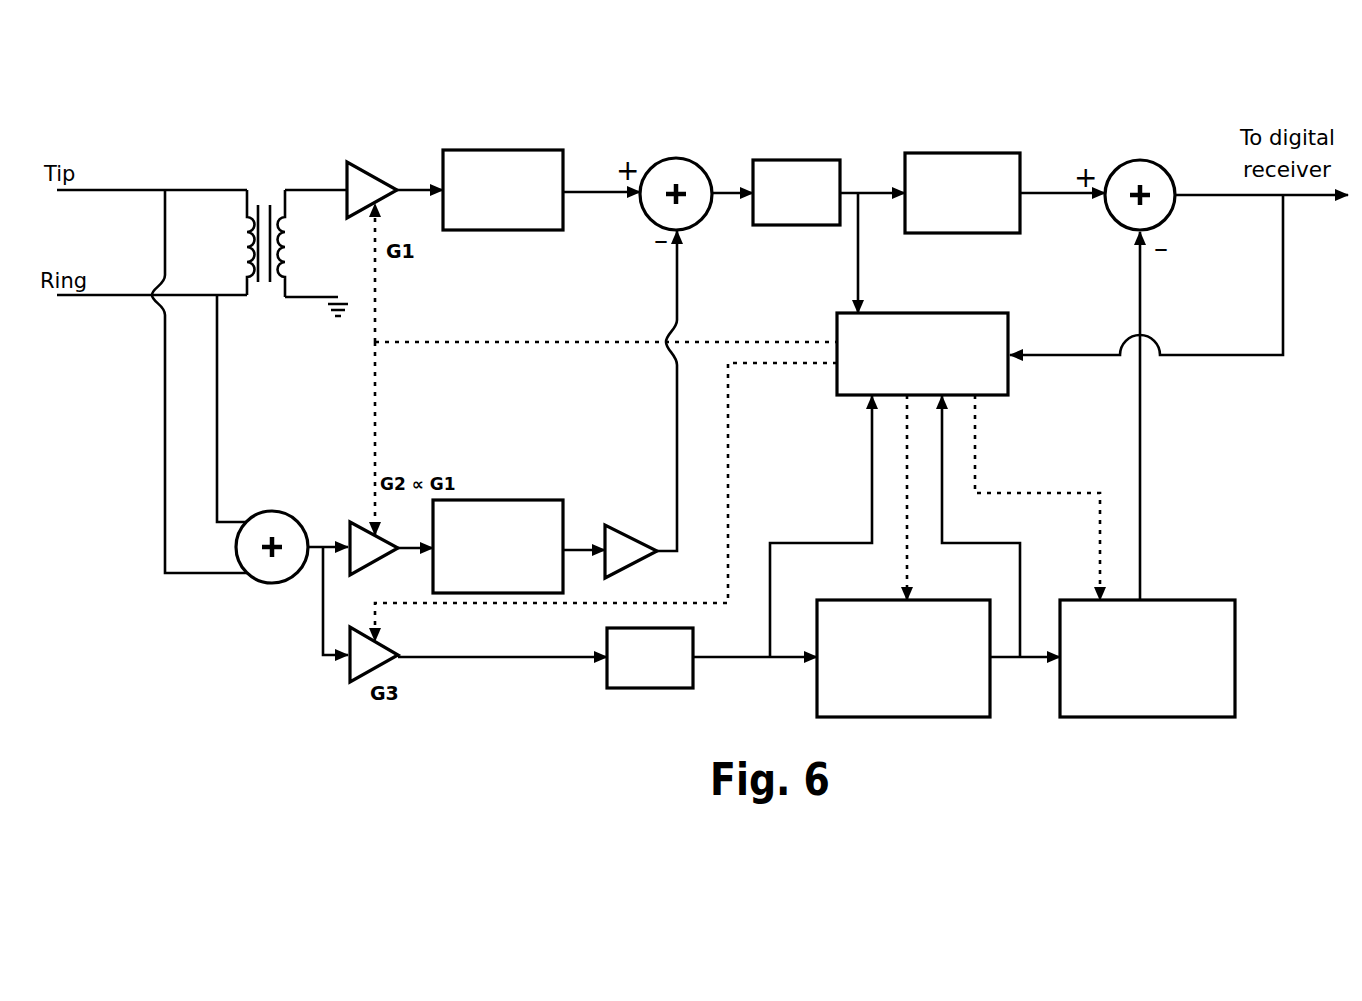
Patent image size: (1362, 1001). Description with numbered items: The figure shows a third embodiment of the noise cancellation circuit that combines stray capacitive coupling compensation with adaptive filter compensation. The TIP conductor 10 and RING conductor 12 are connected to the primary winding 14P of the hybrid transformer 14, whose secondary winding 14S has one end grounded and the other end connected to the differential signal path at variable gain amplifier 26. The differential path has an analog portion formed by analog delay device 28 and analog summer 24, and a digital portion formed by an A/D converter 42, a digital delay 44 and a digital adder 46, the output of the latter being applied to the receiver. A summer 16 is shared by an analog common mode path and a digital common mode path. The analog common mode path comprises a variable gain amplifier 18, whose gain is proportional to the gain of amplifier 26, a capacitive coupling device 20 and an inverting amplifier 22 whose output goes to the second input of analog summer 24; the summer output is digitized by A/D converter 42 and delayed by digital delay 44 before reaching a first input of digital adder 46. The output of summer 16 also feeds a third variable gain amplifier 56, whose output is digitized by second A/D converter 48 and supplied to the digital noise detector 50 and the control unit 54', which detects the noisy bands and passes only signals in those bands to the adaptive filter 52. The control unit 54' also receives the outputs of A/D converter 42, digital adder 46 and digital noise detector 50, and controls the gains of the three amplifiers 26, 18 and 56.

The TIP conductor 10 is at (113, 188).
The RING conductor 12 is at (123, 298).
The hybrid transformer 14 is at (267, 186).
The primary winding 14P is at (247, 223).
The secondary winding 14S is at (286, 227).
The summer 16 is at (281, 513).
The variable gain amplifier 18 is at (390, 538).
The capacitive coupling device 20 is at (523, 499).
The inverting amplifier 22 is at (630, 527).
The analog summer 24 is at (687, 157).
The variable gain amplifier 26 is at (367, 170).
The analog delay device 28 is at (500, 149).
The A/D converter 42 is at (800, 159).
The digital delay 44 is at (963, 152).
The digital adder 46 is at (1142, 160).
The second A/D converter 48 is at (672, 690).
The digital noise detector 50 is at (887, 718).
The adaptive filter 52 is at (1127, 718).
The control unit 54' is at (922, 325).
The third variable gain amplifier 56 is at (362, 683).